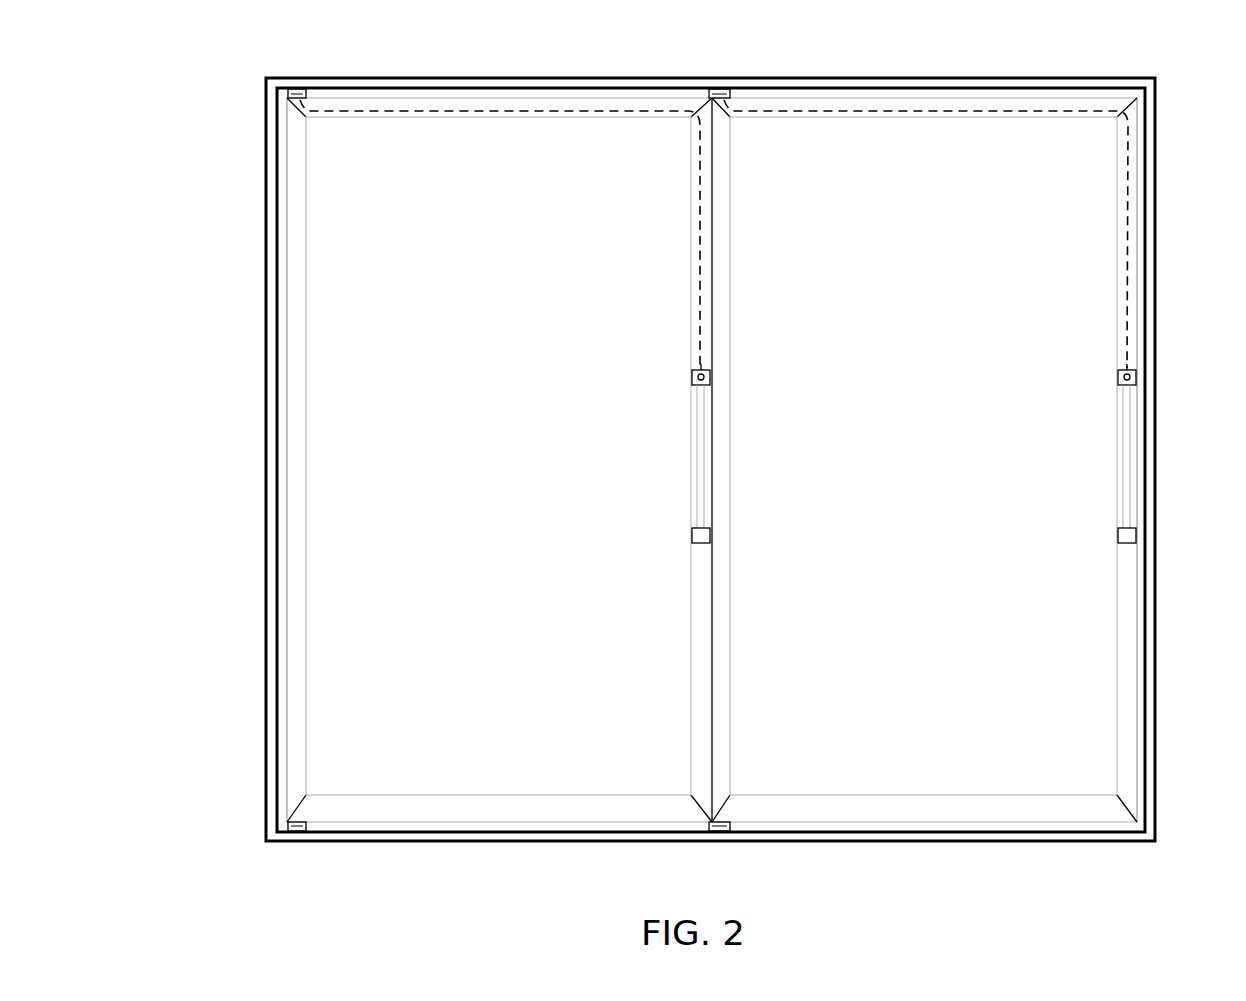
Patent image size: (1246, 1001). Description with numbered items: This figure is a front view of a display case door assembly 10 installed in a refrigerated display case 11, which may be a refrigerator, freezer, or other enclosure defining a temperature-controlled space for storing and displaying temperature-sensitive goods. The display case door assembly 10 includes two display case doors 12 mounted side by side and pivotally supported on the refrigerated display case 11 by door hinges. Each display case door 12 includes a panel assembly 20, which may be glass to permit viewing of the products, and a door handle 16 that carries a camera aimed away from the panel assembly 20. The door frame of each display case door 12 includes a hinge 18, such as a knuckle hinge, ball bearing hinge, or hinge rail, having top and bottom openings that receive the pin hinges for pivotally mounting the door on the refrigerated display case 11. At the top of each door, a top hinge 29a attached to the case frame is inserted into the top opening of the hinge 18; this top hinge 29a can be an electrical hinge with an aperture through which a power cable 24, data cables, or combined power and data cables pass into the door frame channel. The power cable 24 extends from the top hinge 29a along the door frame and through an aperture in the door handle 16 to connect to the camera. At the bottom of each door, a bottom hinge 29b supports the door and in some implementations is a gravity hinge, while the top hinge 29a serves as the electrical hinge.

The display case door assembly 10 is at (1068, 66).
The refrigerated display case 11 is at (273, 333).
The display case door 12 is at (290, 148).
The door handle 16 is at (697, 492).
The hinge 18 is at (305, 542).
The panel assembly 20 is at (340, 665).
The power cable 24 is at (606, 112).
The top hinge 29a is at (300, 92).
The bottom hinge 29b is at (305, 830).